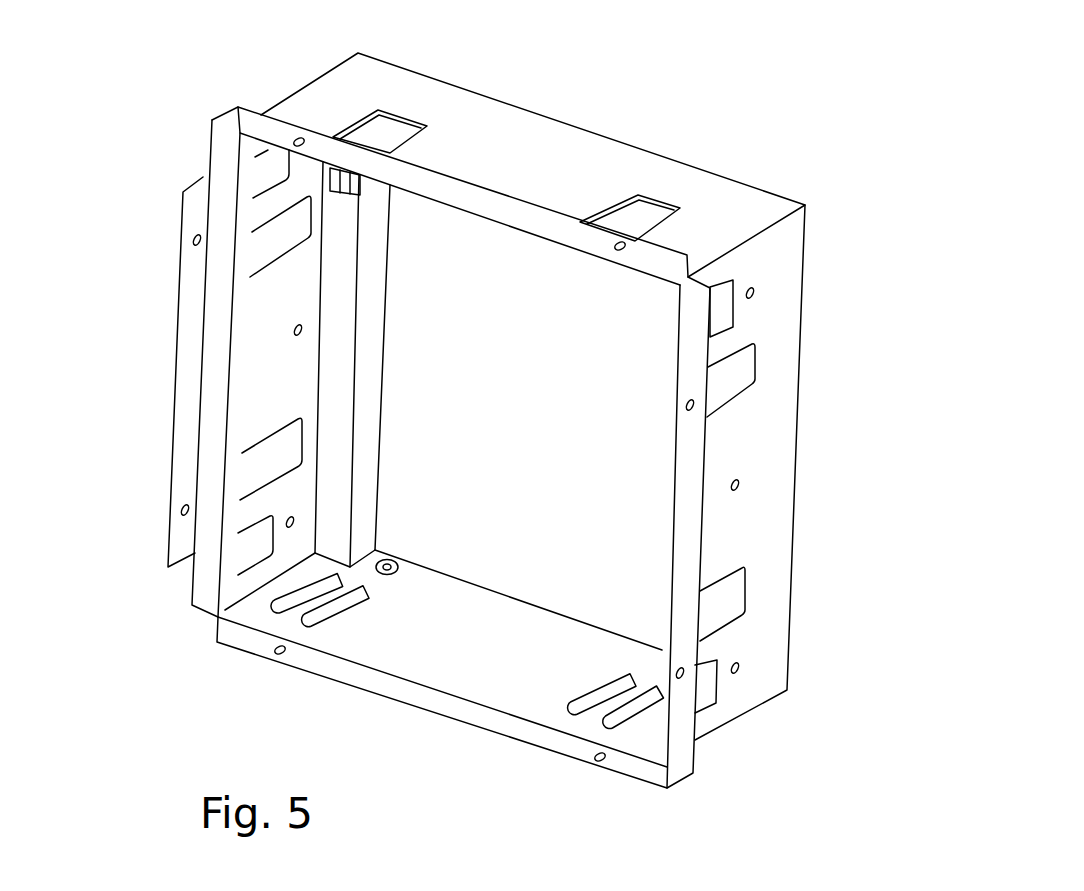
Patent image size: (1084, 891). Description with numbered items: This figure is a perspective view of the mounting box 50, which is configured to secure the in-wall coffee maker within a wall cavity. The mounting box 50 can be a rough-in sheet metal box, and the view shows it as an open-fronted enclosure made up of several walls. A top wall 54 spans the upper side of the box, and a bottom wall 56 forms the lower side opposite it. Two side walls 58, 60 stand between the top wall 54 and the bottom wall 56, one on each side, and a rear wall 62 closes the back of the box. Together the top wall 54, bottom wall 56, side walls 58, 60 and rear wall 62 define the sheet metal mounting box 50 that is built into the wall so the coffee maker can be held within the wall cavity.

The mounting box 50 is at (350, 85).
The top wall 54 is at (478, 122).
The bottom wall 56 is at (460, 648).
The side wall 58 is at (771, 407).
The side wall 60 is at (266, 358).
The rear wall 62 is at (440, 500).